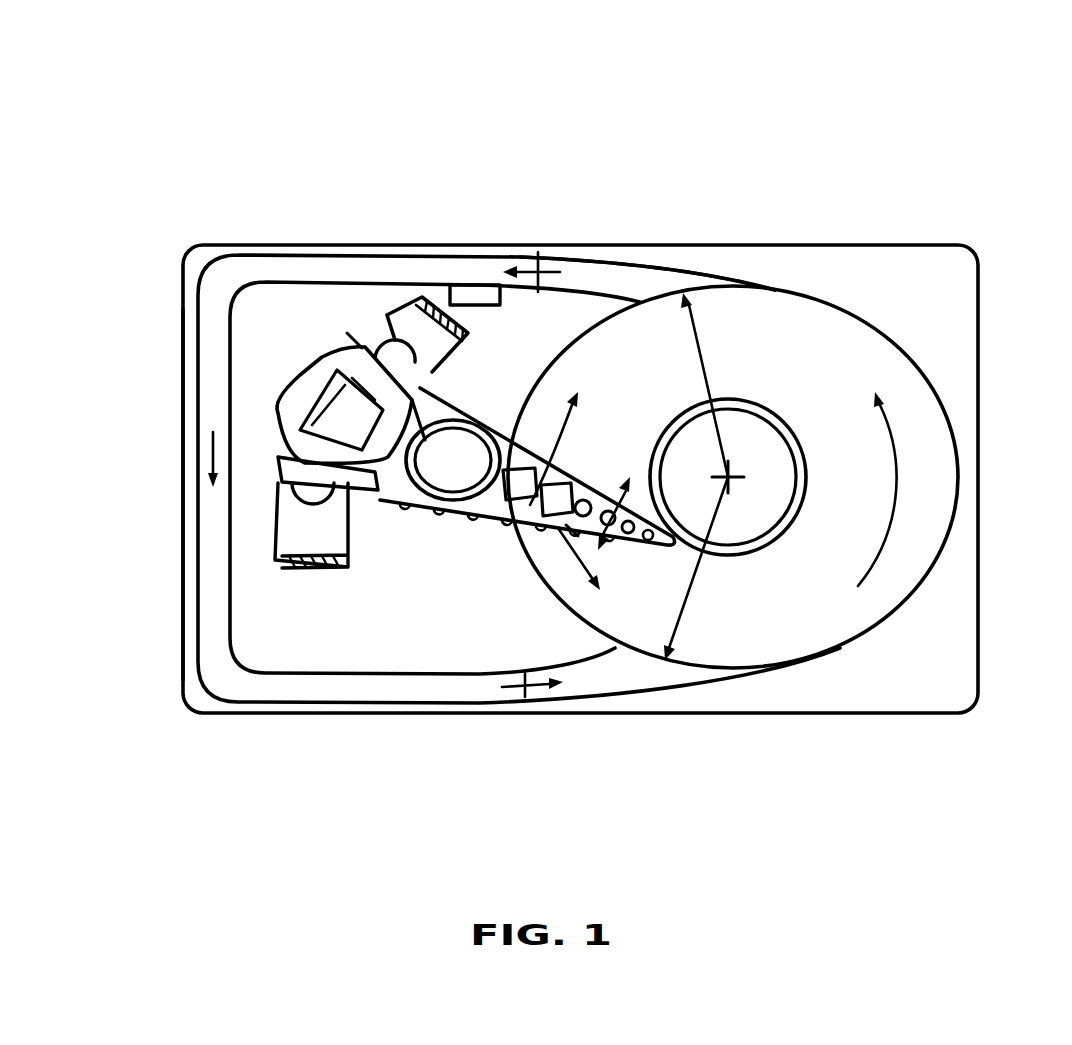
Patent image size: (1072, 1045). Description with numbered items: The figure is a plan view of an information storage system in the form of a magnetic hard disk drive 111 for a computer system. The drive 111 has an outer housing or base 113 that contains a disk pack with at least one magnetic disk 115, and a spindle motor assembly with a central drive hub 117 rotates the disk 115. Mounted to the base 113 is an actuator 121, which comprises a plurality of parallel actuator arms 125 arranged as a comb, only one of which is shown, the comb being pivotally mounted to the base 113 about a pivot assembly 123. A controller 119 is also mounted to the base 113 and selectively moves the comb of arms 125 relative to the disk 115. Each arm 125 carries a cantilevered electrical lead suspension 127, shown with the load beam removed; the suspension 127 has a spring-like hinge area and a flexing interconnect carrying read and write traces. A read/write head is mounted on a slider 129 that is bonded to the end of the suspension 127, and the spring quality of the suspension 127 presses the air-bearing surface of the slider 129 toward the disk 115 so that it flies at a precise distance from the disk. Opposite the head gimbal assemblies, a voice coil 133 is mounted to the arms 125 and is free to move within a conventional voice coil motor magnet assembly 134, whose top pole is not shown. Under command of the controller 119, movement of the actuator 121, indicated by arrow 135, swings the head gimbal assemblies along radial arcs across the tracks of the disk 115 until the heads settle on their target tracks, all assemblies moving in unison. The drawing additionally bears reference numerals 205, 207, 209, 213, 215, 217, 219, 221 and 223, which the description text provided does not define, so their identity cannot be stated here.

The magnetic hard disk drive 111 is at (928, 142).
The base 113 is at (808, 245).
The magnetic disk 115 is at (823, 318).
The central drive hub 117 is at (767, 412).
The controller 119 is at (483, 305).
The actuator 121 is at (375, 577).
The pivot assembly 123 is at (425, 507).
The actuator arm 125 is at (510, 447).
The electrical lead suspension 127 is at (560, 470).
The slider 129 is at (633, 547).
The voice coil 133 is at (307, 362).
The voice coil motor magnet assembly 134 is at (403, 327).
The actuator movement arrow 135 is at (573, 533).
The airflow direction arrows 205 is at (577, 393).
The disk radius arrow (upper) 207 is at (705, 360).
The disk radius arrow (lower) 209 is at (687, 602).
The inner shroud wall 213 is at (617, 297).
The lower flow passage 215 is at (657, 680).
The housing side wall 217 is at (181, 345).
The outer flow channel / shroud 219 is at (482, 272).
The upper flow passage 221 is at (620, 273).
The flow exit arrow 223 is at (577, 675).